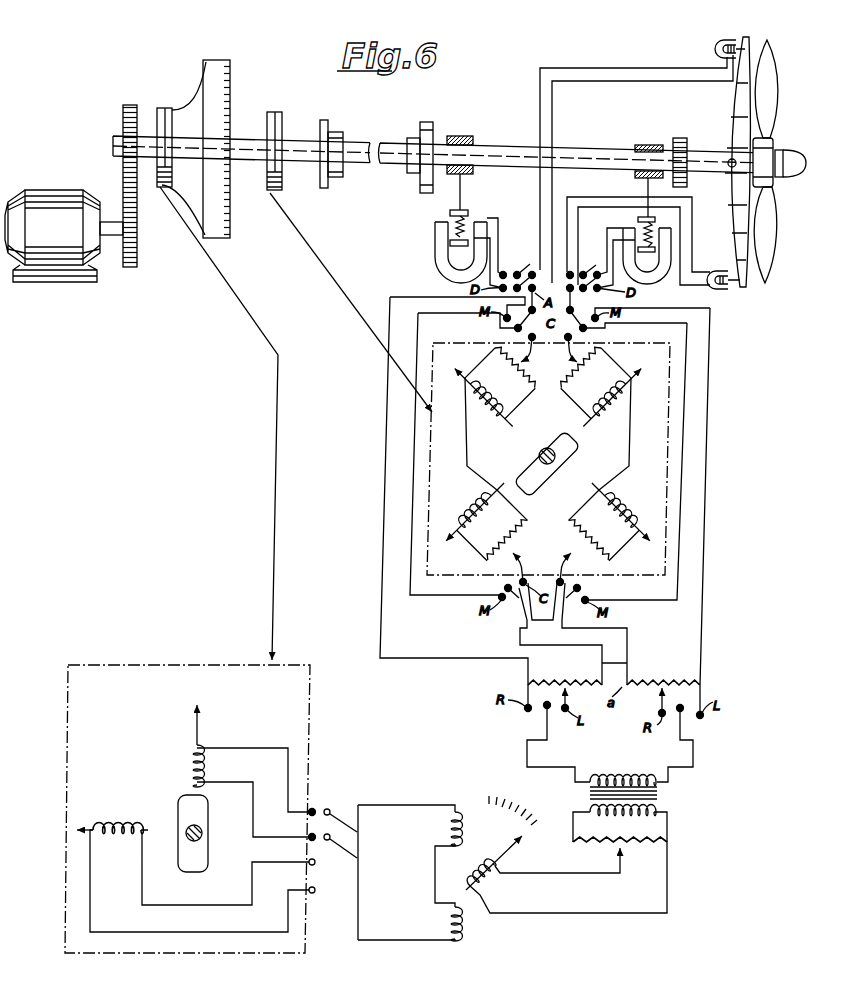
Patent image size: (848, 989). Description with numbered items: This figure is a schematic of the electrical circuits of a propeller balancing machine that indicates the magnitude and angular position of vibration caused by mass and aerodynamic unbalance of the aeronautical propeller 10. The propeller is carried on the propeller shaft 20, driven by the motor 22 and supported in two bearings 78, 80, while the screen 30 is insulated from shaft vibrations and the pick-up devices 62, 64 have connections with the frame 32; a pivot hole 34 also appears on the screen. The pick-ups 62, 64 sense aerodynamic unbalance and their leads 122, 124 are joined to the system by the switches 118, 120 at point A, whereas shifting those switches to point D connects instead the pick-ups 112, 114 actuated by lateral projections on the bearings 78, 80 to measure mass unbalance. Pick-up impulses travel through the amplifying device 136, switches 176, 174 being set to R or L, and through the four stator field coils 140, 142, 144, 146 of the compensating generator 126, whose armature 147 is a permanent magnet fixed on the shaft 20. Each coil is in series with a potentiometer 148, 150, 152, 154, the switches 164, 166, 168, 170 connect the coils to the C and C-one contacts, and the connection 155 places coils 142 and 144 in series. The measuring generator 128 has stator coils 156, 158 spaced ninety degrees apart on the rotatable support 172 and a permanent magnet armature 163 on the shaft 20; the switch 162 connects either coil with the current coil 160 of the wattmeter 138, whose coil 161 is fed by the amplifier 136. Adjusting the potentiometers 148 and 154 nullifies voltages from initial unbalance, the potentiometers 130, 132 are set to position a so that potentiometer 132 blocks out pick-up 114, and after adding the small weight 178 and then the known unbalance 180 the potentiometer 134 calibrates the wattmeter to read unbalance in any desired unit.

The aeronautical propeller 10 is at (784, 180).
The propeller shaft 20 is at (240, 142).
The motor 22 is at (65, 162).
The screen 30 is at (748, 92).
The frame 32 is at (727, 200).
The pivot hole 34 is at (728, 160).
The electrical pick-up device 62 is at (716, 45).
The electrical pick-up device 64 is at (718, 292).
The bearing 78 is at (462, 135).
The bearing 80 is at (646, 144).
The electric pick-up device 112 is at (658, 275).
The electric pick-up device 114 is at (436, 272).
The switch 118 is at (583, 272).
The switch 120 is at (505, 270).
The lead 122 is at (648, 75).
The lead 124 is at (632, 200).
The compensating generator 126 is at (285, 113).
The measuring generator 128 is at (157, 115).
The potentiometer 130 is at (655, 684).
The potentiometer 132 is at (545, 684).
The potentiometer 134 is at (642, 840).
The amplifying device 136 is at (660, 795).
The wattmeter 138 is at (485, 798).
The stator field coil 140 is at (621, 404).
The stator field coil 142 is at (611, 518).
The stator field coil 144 is at (477, 516).
The stator field coil 146 is at (483, 395).
The armature 147 is at (528, 462).
The potentiometer 148 is at (561, 392).
The potentiometer 150 is at (566, 526).
The potentiometer 152 is at (517, 540).
The potentiometer 154 is at (523, 366).
The connection 155 is at (608, 663).
The stator coil 156 is at (190, 748).
The stator coil 158 is at (115, 822).
The current coil 160 is at (413, 873).
The coil 161 is at (492, 888).
The switch 162 is at (323, 810).
The permanent magnet armature 163 is at (207, 865).
The switch 164 is at (586, 329).
The switch 166 is at (515, 329).
The switch 168 is at (579, 588).
The switch 170 is at (506, 588).
The rotatable support 172 is at (225, 60).
The switch 174 is at (683, 729).
The switch 176 is at (545, 727).
The small weight 178 is at (780, 150).
The known unbalance 180 is at (755, 148).